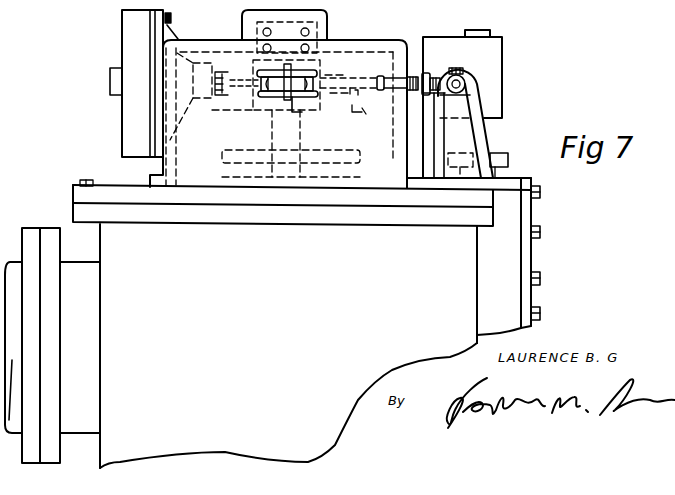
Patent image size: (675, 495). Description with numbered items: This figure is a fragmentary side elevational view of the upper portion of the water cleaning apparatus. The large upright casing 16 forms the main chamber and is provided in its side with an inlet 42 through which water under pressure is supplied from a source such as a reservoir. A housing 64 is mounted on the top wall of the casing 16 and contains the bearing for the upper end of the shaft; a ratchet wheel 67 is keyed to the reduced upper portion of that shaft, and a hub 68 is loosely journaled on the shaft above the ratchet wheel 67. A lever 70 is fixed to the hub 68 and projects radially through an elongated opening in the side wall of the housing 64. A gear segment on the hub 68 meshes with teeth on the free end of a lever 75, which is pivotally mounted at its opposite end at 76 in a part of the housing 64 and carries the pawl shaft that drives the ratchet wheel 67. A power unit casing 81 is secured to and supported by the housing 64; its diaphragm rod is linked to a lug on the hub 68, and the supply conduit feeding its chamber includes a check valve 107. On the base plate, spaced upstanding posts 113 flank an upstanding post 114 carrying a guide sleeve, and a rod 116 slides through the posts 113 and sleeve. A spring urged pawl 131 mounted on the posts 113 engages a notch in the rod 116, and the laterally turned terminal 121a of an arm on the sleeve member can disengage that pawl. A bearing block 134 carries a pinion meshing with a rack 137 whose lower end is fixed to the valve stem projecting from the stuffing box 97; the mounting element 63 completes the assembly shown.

The casing 16 is at (322, 447).
The inlet 42 is at (52, 345).
The mounting plate 63 is at (505, 258).
The housing 64 is at (347, 44).
The ratchet wheel 67 is at (357, 110).
The hub 68 is at (338, 78).
The lever 70 is at (412, 74).
The lever 75 is at (259, 98).
The pivot 76 is at (303, 113).
The power unit casing 81 is at (118, 42).
The stuffing box 97 is at (498, 173).
The check valve 107 is at (110, 88).
The upstanding posts 113 is at (473, 148).
The upstanding post 114 is at (483, 128).
The rod 116 is at (478, 85).
The laterally turned terminal 121a is at (426, 72).
The spring urged pawl 131 is at (460, 68).
The bearing block 134 is at (503, 63).
The rack 137 is at (489, 33).